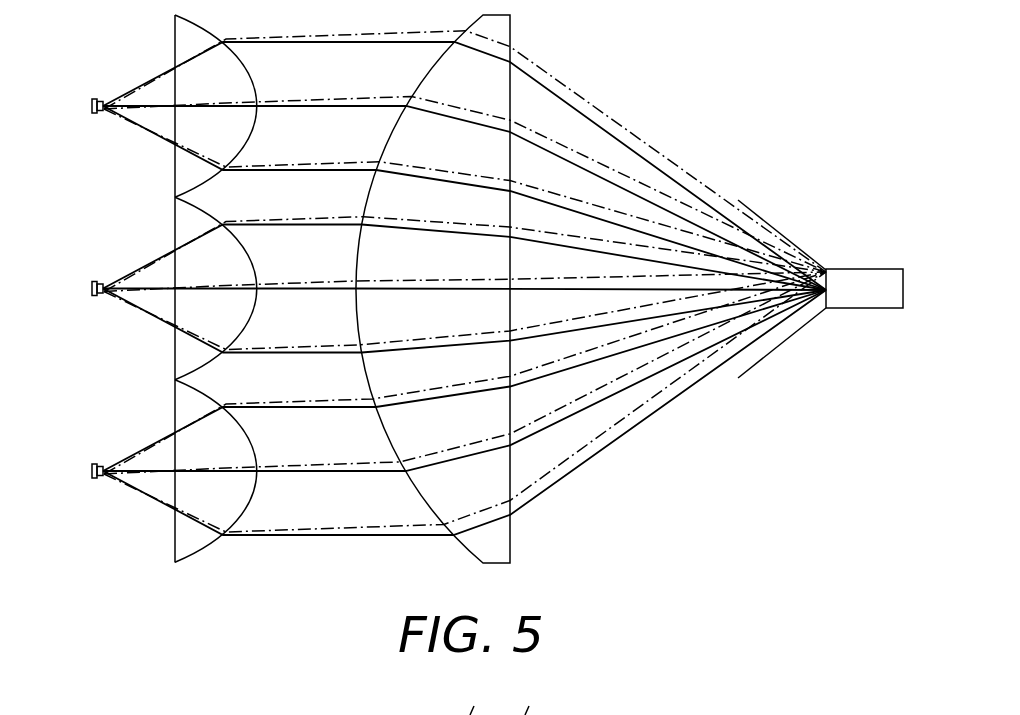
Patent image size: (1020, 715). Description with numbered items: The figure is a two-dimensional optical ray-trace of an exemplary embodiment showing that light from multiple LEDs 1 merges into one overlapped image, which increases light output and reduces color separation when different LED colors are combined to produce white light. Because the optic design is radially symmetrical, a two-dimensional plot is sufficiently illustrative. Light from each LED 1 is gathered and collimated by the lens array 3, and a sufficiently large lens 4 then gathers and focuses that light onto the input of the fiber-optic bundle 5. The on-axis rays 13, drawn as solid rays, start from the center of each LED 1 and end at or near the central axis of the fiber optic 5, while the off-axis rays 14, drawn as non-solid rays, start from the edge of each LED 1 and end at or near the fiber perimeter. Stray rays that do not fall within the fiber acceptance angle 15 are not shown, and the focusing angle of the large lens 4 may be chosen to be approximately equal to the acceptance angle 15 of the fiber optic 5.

The light emitting diode 1 is at (95, 466).
The lens array 3 is at (205, 28).
The large lens 4 is at (503, 25).
The fiber-optic bundle 5 is at (863, 269).
The on-axis rays 13 is at (419, 403).
The off-axis rays 14 is at (641, 128).
The fiber acceptance angle 15 is at (766, 222).